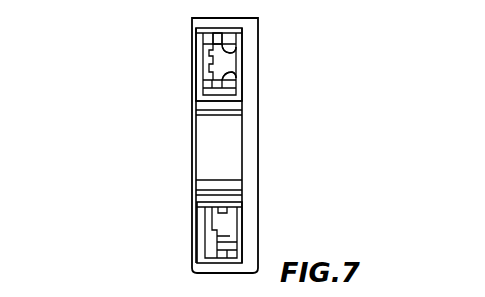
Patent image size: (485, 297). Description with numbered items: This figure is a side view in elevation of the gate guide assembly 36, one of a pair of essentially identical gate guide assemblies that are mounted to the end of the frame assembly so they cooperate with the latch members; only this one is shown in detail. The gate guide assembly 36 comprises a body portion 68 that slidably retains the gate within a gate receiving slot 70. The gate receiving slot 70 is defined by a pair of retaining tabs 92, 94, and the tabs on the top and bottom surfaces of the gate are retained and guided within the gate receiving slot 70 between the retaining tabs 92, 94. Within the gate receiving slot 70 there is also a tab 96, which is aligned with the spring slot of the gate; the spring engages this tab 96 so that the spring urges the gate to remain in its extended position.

The gate guide assembly 36 is at (278, 25).
The body portion 68 is at (260, 153).
The gate receiving slot 70 is at (215, 72).
The retaining tab 92 is at (240, 44).
The retaining tab 94 is at (232, 74).
The tab 96 is at (230, 46).